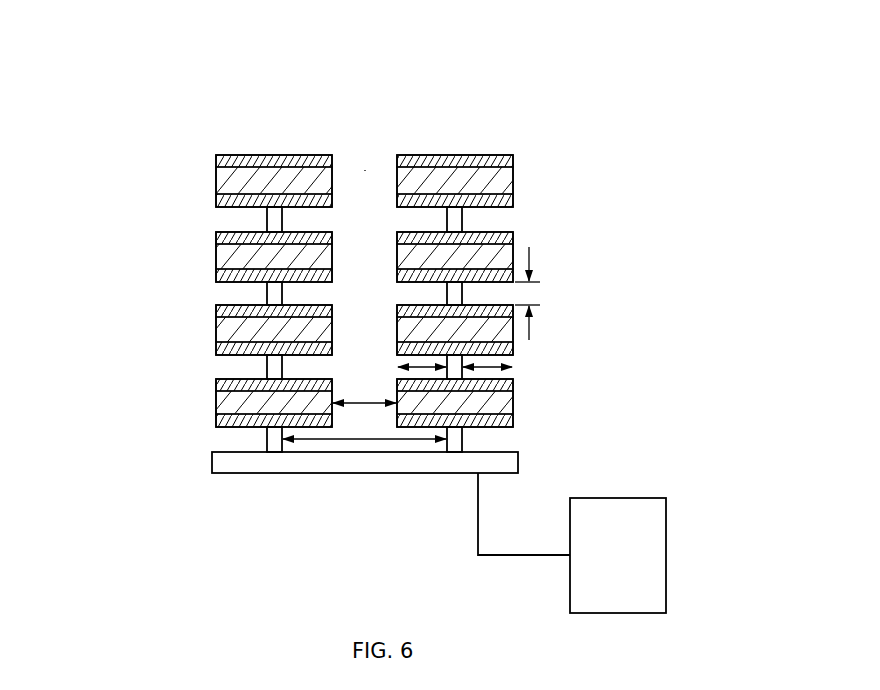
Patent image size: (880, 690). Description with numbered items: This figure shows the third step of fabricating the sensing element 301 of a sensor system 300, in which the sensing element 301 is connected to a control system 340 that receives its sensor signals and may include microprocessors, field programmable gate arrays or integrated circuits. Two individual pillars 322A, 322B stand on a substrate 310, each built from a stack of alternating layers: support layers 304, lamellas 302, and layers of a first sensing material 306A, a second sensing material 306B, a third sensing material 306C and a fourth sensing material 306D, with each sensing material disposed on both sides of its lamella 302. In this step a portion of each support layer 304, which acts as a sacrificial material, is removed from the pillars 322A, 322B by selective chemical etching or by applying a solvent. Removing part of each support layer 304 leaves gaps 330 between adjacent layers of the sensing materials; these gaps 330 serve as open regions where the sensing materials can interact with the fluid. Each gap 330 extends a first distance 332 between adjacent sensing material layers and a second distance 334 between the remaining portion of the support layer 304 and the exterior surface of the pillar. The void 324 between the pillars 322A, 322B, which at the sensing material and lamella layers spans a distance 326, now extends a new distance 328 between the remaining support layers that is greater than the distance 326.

The stage system 300 is at (482, 48).
The sensing element 301 is at (472, 116).
The lamella 302 is at (513, 403).
The support layer 304 is at (466, 443).
The first sensing material 306A is at (216, 384).
The second sensing material 306B is at (216, 310).
The third sensing material 306C is at (216, 237).
The fourth sensing material 306D is at (216, 160).
The substrate 310 is at (316, 474).
The first pillar 322A is at (254, 135).
The second pillar 322B is at (422, 133).
The void 324 is at (365, 165).
The distance 326 is at (363, 398).
The new distance 328 is at (393, 441).
The gap 330 is at (498, 221).
The first distance 332 is at (535, 288).
The second distance 334 is at (513, 362).
The control system 340 is at (667, 553).